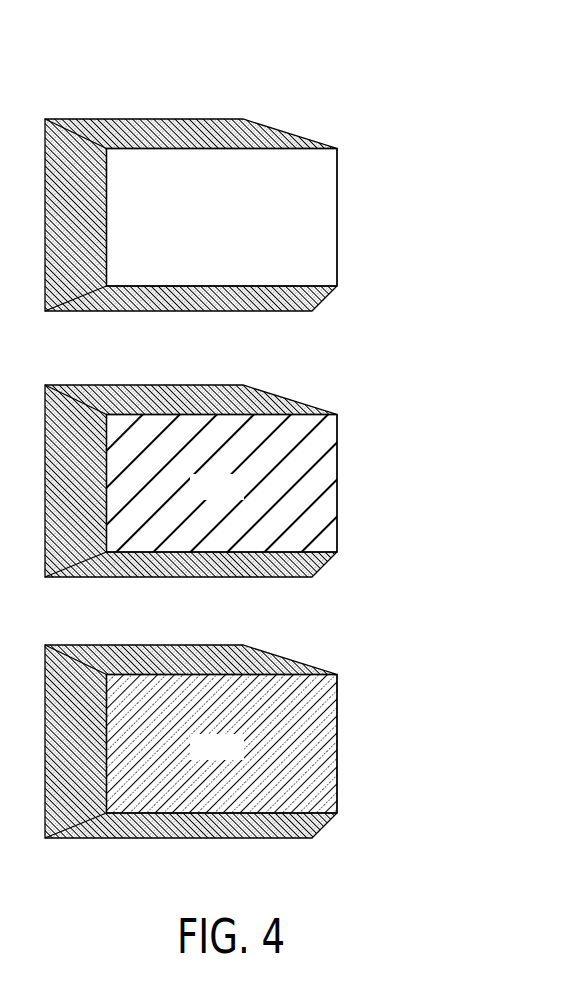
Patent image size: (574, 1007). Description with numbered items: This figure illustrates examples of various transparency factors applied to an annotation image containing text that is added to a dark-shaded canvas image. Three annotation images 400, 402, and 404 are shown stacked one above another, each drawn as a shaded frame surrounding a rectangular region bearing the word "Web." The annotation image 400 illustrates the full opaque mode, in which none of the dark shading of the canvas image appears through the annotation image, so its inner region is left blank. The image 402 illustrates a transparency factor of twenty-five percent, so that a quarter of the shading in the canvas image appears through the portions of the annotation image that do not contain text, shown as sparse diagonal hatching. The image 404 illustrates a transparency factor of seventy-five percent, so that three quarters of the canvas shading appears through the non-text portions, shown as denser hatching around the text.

The annotation image 400 is at (372, 92).
The image 402 is at (372, 362).
The image 404 is at (368, 625).